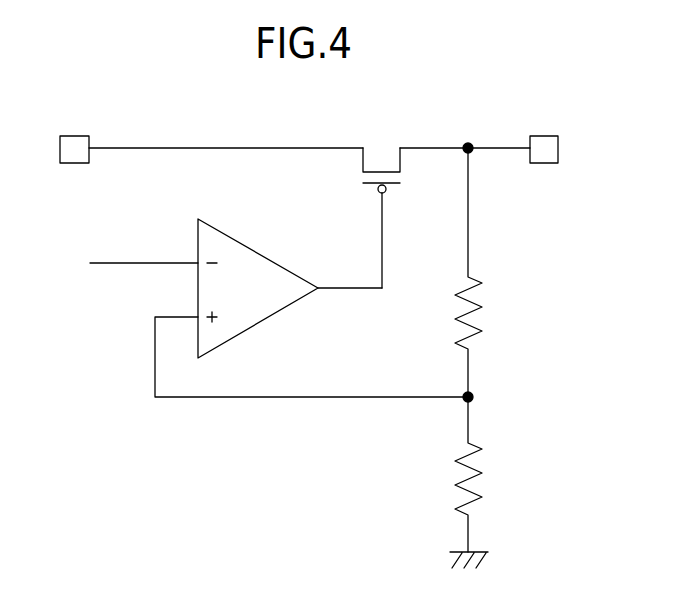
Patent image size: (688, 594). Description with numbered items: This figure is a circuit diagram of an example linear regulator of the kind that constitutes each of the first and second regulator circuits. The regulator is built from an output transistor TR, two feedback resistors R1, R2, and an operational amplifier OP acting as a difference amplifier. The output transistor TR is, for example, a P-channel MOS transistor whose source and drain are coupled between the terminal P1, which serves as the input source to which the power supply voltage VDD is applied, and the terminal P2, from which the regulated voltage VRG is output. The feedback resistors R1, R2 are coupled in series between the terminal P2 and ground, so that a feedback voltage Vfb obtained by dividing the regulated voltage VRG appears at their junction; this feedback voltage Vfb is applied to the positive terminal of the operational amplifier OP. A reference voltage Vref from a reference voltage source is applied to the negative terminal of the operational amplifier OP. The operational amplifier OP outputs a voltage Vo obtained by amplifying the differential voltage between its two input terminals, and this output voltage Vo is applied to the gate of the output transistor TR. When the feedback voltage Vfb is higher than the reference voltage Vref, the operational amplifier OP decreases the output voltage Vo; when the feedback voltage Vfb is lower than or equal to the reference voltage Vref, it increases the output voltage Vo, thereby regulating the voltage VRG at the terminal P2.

The power supply voltage VDD is at (207, 129).
The regulated voltage VRG is at (482, 130).
The terminal P1 is at (72, 156).
The terminal P2 is at (547, 156).
The output transistor TR is at (388, 186).
The operational amplifier OP is at (258, 253).
The reference voltage Vref is at (144, 250).
The output voltage Vo is at (350, 275).
The feedback voltage Vfb is at (314, 359).
The feedback resistor R1 is at (478, 300).
The feedback resistor R2 is at (478, 468).